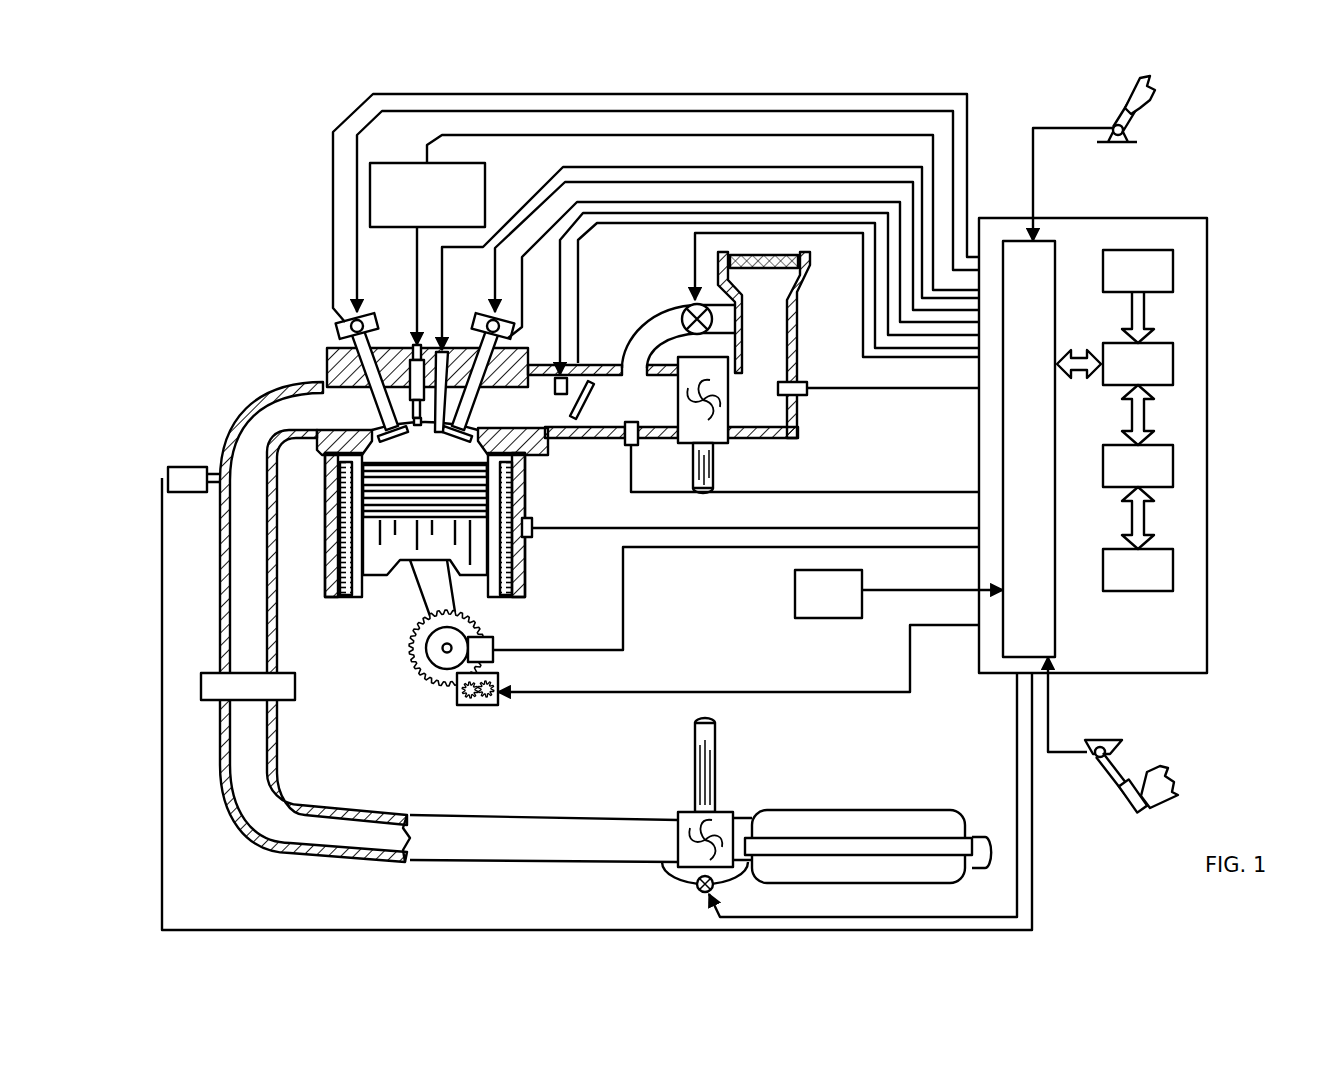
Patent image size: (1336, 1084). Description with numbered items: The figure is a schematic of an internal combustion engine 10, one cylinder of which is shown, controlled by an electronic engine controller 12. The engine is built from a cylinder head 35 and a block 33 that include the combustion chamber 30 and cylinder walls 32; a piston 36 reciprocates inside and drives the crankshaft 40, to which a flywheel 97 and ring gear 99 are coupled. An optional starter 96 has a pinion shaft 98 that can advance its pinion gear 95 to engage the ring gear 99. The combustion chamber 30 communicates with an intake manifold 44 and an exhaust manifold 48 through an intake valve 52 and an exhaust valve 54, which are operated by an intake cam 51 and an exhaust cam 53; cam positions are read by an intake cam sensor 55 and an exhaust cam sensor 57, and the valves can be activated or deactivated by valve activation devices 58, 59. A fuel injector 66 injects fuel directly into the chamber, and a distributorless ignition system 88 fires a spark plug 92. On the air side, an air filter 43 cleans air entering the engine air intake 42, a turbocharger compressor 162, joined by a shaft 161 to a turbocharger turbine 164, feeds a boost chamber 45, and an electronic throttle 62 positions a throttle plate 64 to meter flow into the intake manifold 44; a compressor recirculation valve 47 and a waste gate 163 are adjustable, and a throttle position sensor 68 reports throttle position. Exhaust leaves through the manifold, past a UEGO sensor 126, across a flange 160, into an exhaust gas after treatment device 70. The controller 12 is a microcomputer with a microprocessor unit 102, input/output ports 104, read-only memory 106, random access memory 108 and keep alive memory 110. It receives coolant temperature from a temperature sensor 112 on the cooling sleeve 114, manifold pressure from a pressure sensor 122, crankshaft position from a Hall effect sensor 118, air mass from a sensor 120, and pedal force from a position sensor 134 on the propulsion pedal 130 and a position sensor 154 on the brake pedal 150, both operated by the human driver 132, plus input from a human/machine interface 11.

The internal combustion engine 10 is at (566, 512).
The human/machine interface 11 is at (899, 594).
The electronic engine controller 12 is at (1141, 428).
The combustion chamber 30 is at (408, 448).
The cylinder walls 32 is at (370, 585).
The block 33 is at (324, 495).
The cylinder head 35 is at (320, 342).
The piston 36 is at (410, 548).
The crankshaft 40 is at (423, 656).
The engine air intake 42 is at (634, 275).
The air filter 43 is at (778, 270).
The intake manifold 44 is at (557, 417).
The boost chamber 45 is at (654, 417).
The compressor recirculation valve 47 is at (686, 305).
The exhaust manifold 48 is at (307, 419).
The intake cam 51 is at (492, 315).
The intake valve 52 is at (468, 402).
The exhaust cam 53 is at (363, 312).
The exhaust valve 54 is at (345, 405).
The intake cam sensor 55 is at (502, 316).
The exhaust cam sensor 57 is at (350, 310).
The valve activation device 58 is at (373, 332).
The valve activation device 59 is at (483, 325).
The electronic throttle 62 is at (585, 398).
The throttle plate 64 is at (570, 408).
The fuel injector 66 is at (446, 352).
The throttle position sensor 68 is at (530, 385).
The exhaust gas after treatment device 70 is at (795, 812).
The distributorless ignition system 88 is at (383, 163).
The spark plug 92 is at (414, 347).
The pinion gear 95 is at (484, 700).
The starter 96 is at (691, 688).
The flywheel 97 is at (418, 652).
The pinion shaft 98 is at (467, 702).
The ring gear 99 is at (442, 688).
The microprocessor unit 102 is at (1173, 365).
The input/output ports 104 is at (1055, 258).
The read-only memory 106 is at (1173, 270).
The random access memory 108 is at (1173, 465).
The keep alive memory 110 is at (1173, 568).
The temperature sensor 112 is at (532, 535).
The cooling sleeve 114 is at (515, 560).
The Hall effect sensor 118 is at (493, 640).
The air mass sensor 120 is at (800, 382).
The pressure sensor 122 is at (626, 445).
The Universal Exhaust Gas Oxygen sensor 126 is at (168, 472).
The propulsion pedal 130 is at (1154, 151).
The human driver 132 is at (1148, 93).
The position sensor 134 is at (1128, 130).
The brake pedal 150 is at (1097, 742).
The position sensor 154 is at (1090, 745).
The flange 160 is at (283, 688).
The shaft 161 is at (694, 468).
The turbocharger compressor 162 is at (720, 435).
The waste gate 163 is at (697, 893).
The turbocharger turbine 164 is at (680, 812).